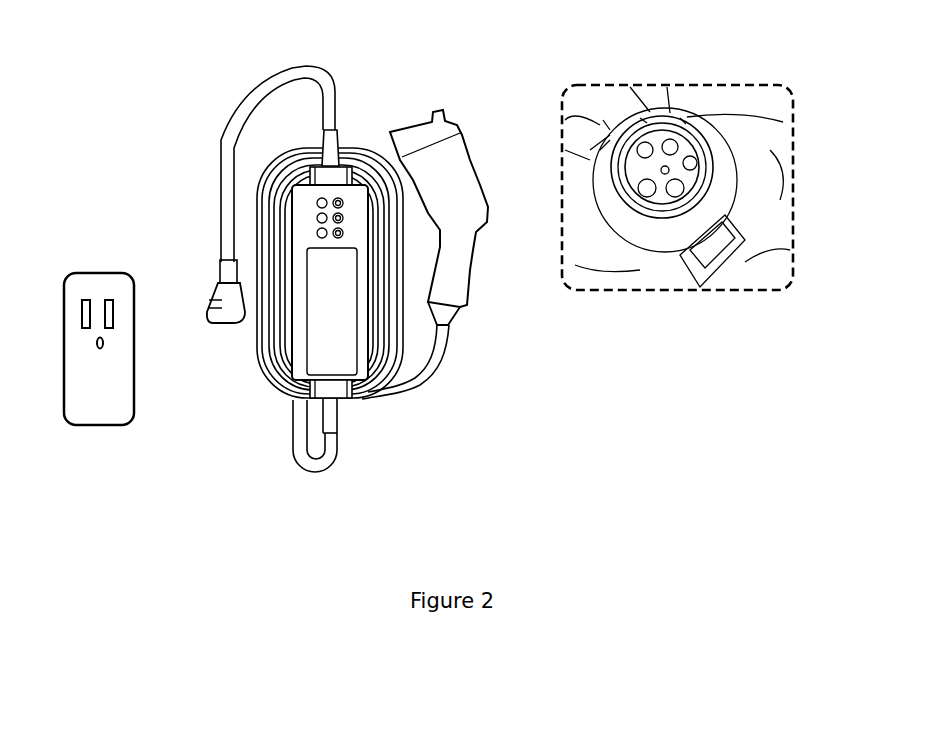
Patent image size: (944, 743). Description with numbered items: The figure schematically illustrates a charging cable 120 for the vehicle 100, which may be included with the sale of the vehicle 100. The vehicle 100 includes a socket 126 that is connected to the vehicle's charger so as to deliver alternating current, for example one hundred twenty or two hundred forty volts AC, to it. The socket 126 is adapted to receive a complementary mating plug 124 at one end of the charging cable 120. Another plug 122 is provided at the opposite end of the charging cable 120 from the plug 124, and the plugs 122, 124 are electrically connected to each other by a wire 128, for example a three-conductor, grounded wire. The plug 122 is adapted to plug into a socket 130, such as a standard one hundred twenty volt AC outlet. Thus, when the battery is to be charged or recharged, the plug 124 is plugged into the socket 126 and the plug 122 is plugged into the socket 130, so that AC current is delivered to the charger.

The vehicle 100 is at (723, 83).
The charging cable 120 is at (267, 422).
The plug 122 is at (223, 335).
The mating plug 124 is at (452, 103).
The socket 126 is at (702, 180).
The wire 128 is at (428, 382).
The socket 130 is at (101, 275).